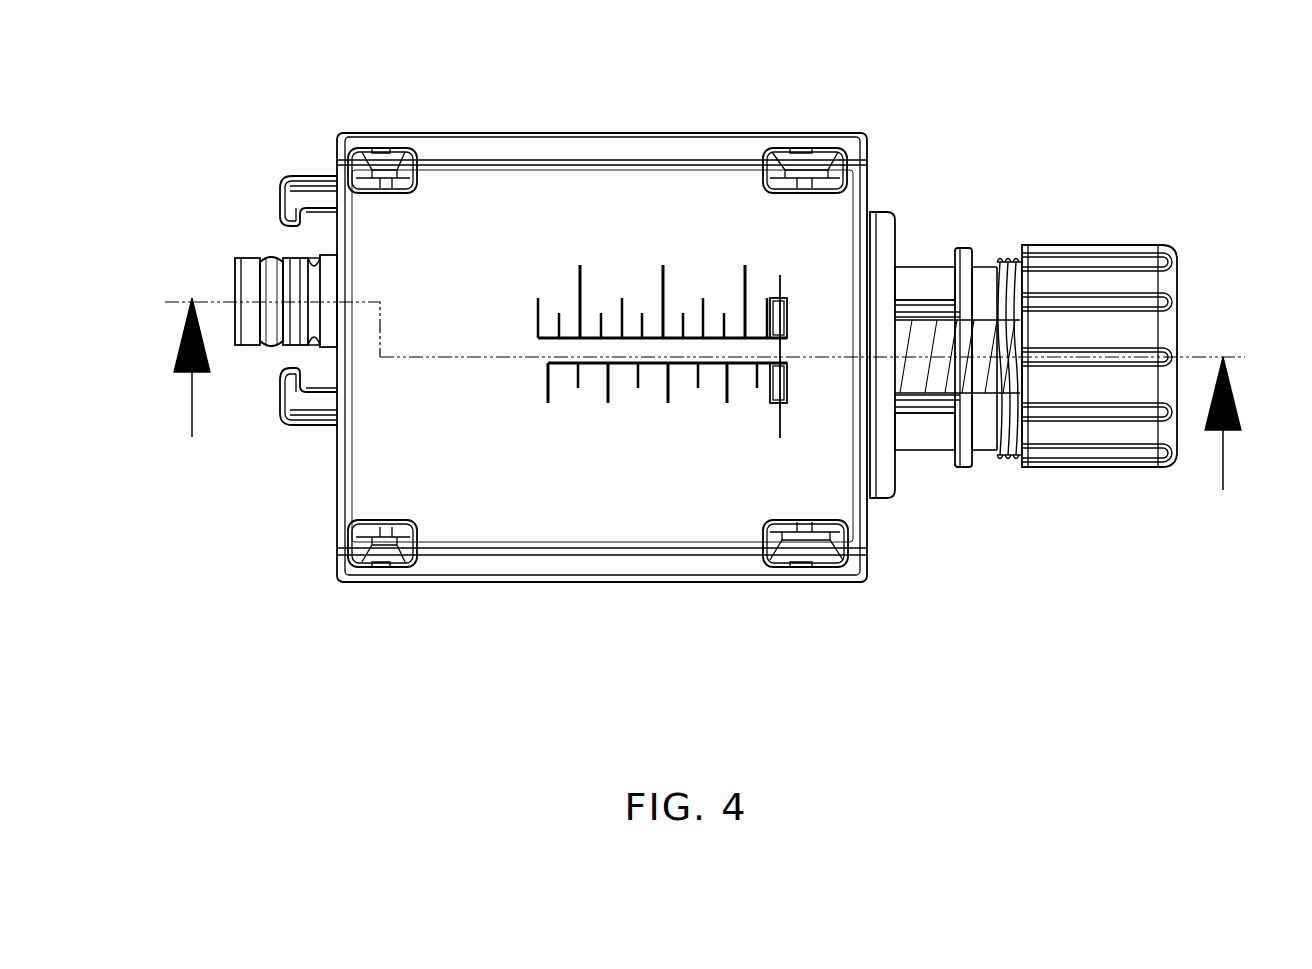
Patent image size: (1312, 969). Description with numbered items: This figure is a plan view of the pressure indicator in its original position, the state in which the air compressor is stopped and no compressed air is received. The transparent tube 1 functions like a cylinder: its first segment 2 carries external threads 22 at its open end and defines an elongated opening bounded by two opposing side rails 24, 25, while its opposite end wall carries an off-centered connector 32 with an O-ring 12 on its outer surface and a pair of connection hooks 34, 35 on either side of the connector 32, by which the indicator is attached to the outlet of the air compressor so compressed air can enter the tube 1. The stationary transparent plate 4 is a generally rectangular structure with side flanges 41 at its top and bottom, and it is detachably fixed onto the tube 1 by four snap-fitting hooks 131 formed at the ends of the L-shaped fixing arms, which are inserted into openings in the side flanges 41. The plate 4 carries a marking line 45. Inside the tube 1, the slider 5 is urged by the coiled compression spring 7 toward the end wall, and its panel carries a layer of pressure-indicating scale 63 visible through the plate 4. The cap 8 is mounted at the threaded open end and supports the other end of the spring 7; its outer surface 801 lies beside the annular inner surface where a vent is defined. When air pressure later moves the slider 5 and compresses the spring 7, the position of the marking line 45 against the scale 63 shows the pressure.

The tube 1 is at (1016, 479).
The first segment 2 is at (928, 390).
The stationary transparent plate 4 is at (627, 190).
The slider 5 is at (707, 422).
The coiled compression spring 7 is at (925, 440).
The cap 8 is at (1118, 435).
The O-ring 12 is at (270, 268).
The external threads 22 is at (1000, 262).
The side rail 24 is at (940, 402).
The side rail 25 is at (925, 310).
The connector 32 is at (245, 288).
The connection hook 34 is at (302, 400).
The connection hook 35 is at (298, 202).
The side flange 41 is at (537, 148).
The marking line 45 is at (785, 290).
The pressure-indicating scale 63 is at (672, 237).
The snap-fitting hook 131 is at (395, 165).
The outer surface 801 is at (1178, 290).